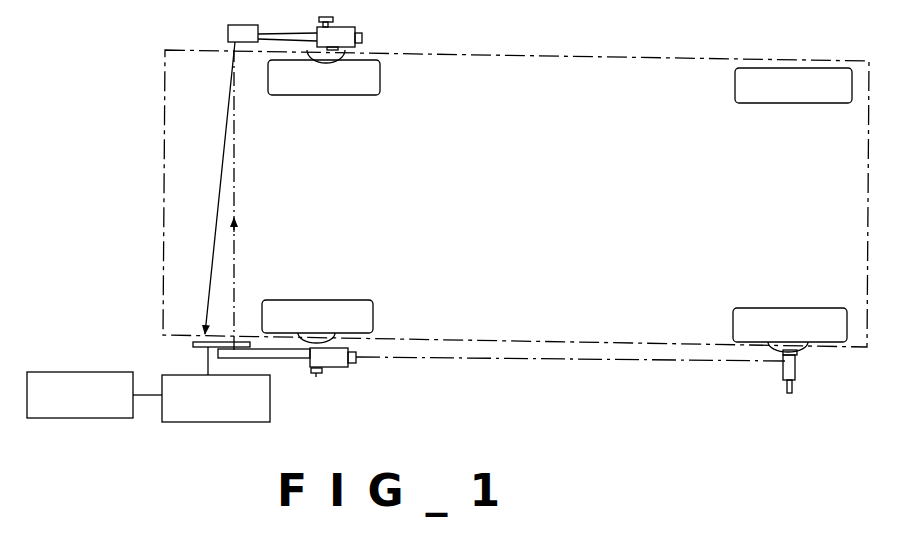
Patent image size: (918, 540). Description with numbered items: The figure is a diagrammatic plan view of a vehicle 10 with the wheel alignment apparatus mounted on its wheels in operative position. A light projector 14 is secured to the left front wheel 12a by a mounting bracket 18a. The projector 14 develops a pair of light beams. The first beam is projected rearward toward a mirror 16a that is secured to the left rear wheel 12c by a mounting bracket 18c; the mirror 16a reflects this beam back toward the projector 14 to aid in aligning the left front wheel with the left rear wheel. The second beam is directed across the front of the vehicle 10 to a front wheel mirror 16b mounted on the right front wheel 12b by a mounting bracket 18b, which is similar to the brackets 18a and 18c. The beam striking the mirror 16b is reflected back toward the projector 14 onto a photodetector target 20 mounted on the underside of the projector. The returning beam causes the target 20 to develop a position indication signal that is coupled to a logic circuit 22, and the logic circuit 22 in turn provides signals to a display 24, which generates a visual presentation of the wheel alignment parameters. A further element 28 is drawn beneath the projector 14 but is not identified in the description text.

The vehicle 10 is at (163, 66).
The left front wheel 12a is at (373, 313).
The right front wheel 12b is at (380, 80).
The left rear wheel 12c is at (733, 322).
The light projector 14 is at (350, 369).
The mirror 16a is at (795, 378).
The front wheel mirror 16b is at (228, 32).
The mounting bracket 18a is at (317, 332).
The mounting bracket 18b is at (345, 58).
The mounting bracket 18c is at (805, 348).
The photodetector target 20 is at (193, 345).
The logic circuit 22 is at (237, 423).
The display 24 is at (95, 419).
The cable 28 is at (317, 377).